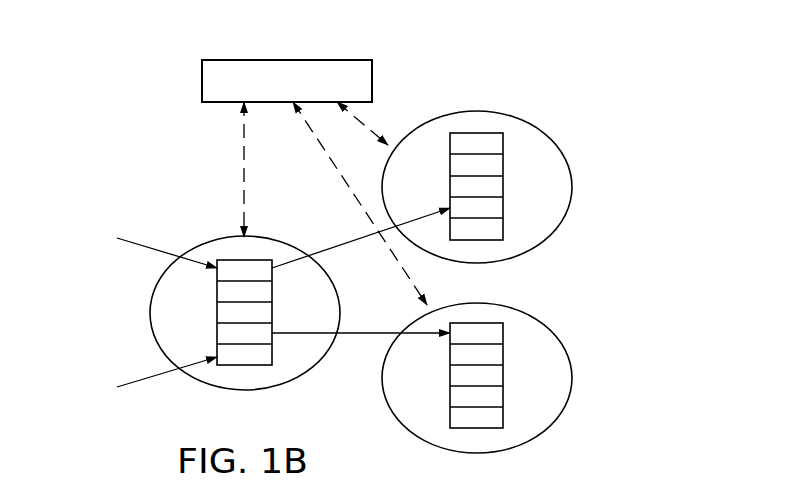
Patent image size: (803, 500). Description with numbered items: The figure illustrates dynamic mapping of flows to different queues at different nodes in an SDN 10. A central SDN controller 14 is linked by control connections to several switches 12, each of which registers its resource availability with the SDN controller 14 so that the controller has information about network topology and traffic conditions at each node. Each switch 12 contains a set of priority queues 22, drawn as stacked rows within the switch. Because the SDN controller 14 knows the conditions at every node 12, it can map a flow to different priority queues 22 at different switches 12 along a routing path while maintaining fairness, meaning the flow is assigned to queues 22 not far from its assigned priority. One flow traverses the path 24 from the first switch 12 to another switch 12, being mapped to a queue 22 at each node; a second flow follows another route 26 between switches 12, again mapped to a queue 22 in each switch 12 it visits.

The SDN 10 is at (125, 143).
The switch 12 is at (150, 312).
The SDN controller 14 is at (201, 71).
The priority queue 22 is at (217, 314).
The path 24 is at (152, 250).
The second packet path 26 is at (153, 377).